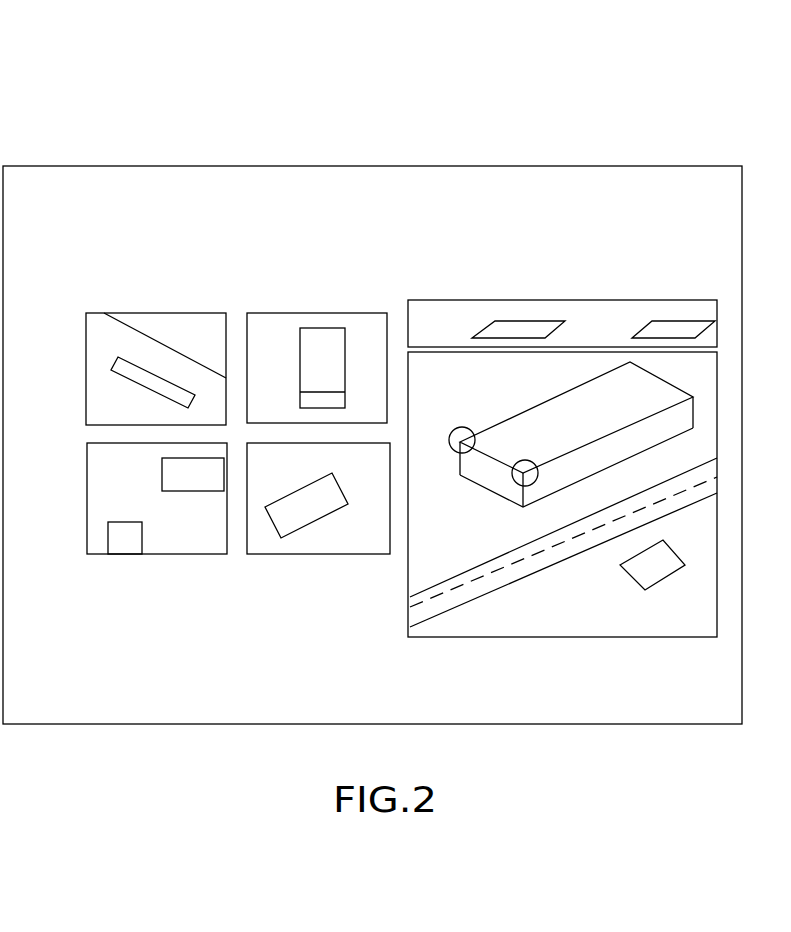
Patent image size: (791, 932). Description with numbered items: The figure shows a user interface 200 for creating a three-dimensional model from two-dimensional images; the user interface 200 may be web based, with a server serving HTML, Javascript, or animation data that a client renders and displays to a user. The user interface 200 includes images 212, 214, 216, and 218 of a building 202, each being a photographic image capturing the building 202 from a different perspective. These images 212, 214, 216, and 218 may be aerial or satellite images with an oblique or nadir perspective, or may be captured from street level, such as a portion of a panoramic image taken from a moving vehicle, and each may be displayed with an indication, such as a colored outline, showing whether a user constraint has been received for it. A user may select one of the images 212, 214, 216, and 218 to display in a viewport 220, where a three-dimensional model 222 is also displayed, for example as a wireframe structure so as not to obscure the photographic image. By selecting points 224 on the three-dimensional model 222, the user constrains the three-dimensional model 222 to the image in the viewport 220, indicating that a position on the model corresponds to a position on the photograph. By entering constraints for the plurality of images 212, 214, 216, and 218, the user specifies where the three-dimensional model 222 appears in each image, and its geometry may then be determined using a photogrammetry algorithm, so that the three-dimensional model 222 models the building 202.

The user interface 200 is at (145, 115).
The building 202 is at (114, 362).
The image 212 is at (138, 416).
The image 214 is at (139, 476).
The image 216 is at (297, 416).
The image 218 is at (299, 476).
The viewport 220 is at (458, 337).
The three-dimensional model 222 is at (608, 378).
The points 224 is at (512, 482).